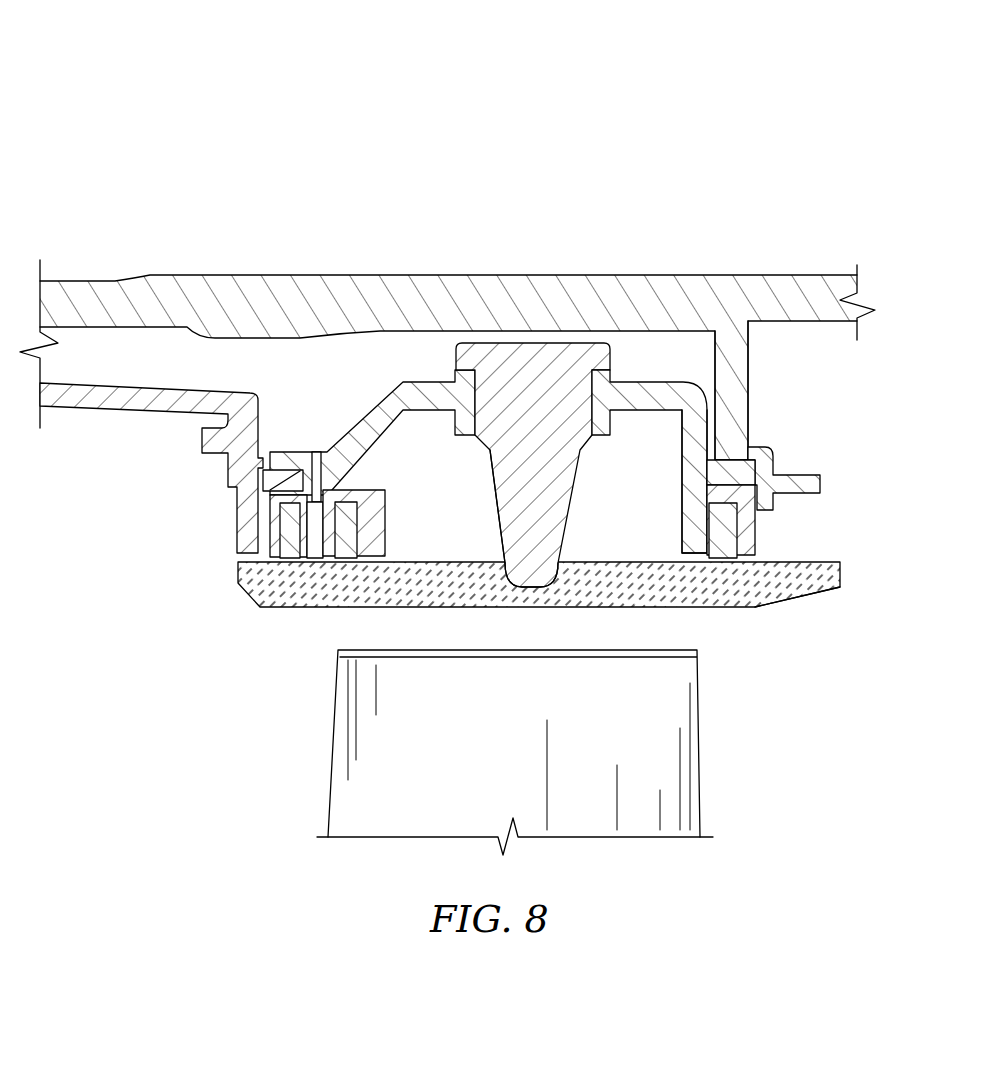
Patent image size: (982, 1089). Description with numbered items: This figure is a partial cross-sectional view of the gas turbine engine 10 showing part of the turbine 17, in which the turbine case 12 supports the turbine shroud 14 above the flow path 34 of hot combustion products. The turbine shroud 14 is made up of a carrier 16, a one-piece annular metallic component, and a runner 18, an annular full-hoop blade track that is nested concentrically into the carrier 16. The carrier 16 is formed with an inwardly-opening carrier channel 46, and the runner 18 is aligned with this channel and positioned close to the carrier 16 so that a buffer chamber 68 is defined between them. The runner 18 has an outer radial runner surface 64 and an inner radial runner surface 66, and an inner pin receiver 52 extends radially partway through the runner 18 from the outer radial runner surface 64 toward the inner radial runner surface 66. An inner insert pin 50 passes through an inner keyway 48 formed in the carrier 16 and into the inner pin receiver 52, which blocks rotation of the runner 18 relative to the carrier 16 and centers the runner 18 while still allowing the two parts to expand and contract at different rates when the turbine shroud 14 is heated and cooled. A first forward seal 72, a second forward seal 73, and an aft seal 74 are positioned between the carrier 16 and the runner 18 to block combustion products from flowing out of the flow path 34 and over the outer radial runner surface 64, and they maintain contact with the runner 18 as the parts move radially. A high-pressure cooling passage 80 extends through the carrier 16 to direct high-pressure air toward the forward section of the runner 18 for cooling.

The gas turbine engine 10 is at (214, 100).
The turbine case 12 is at (114, 266).
The turbine shroud 14 is at (716, 381).
The carrier 16 is at (665, 368).
The turbine 17 is at (174, 128).
The runner 18 is at (704, 622).
The flow path 34 is at (286, 640).
The inwardly-opening carrier channel 46 is at (660, 442).
The inner keyway 48 is at (556, 435).
The inner insert pin 50 is at (490, 497).
The inner pin receiver 52 is at (551, 567).
The outer radial runner surface 64 is at (835, 563).
The inner radial runner surface 66 is at (750, 610).
The buffer chamber 68 is at (648, 490).
The first forward seal 72 is at (278, 522).
The second forward seal 73 is at (348, 510).
The aft seal 74 is at (720, 550).
The high-pressure cooling passage 80 is at (318, 437).